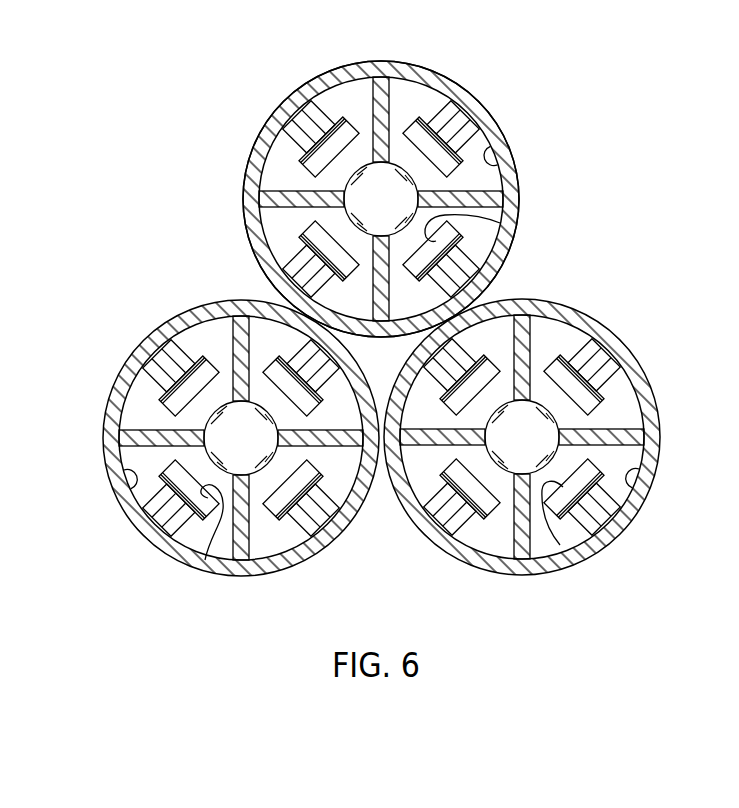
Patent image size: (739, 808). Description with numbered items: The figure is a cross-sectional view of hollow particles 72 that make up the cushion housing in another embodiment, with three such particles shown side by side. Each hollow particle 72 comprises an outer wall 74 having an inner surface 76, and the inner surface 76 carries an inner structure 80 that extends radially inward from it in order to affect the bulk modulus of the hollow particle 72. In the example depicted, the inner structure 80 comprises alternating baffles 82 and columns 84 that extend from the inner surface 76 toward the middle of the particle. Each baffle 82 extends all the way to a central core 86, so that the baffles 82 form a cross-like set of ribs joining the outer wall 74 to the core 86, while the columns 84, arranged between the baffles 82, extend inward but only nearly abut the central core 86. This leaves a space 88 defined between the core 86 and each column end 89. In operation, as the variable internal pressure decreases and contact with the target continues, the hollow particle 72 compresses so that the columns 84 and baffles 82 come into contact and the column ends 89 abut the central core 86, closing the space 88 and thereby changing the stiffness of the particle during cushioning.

The hollow particle 72 is at (200, 57).
The outer wall 74 is at (470, 103).
The inner surface 76 is at (502, 162).
The inner structure 80 is at (279, 195).
The baffle 82 is at (377, 100).
The column 84 is at (320, 132).
The central core 86 is at (389, 219).
The space 88 is at (340, 170).
The column end 89 is at (500, 223).